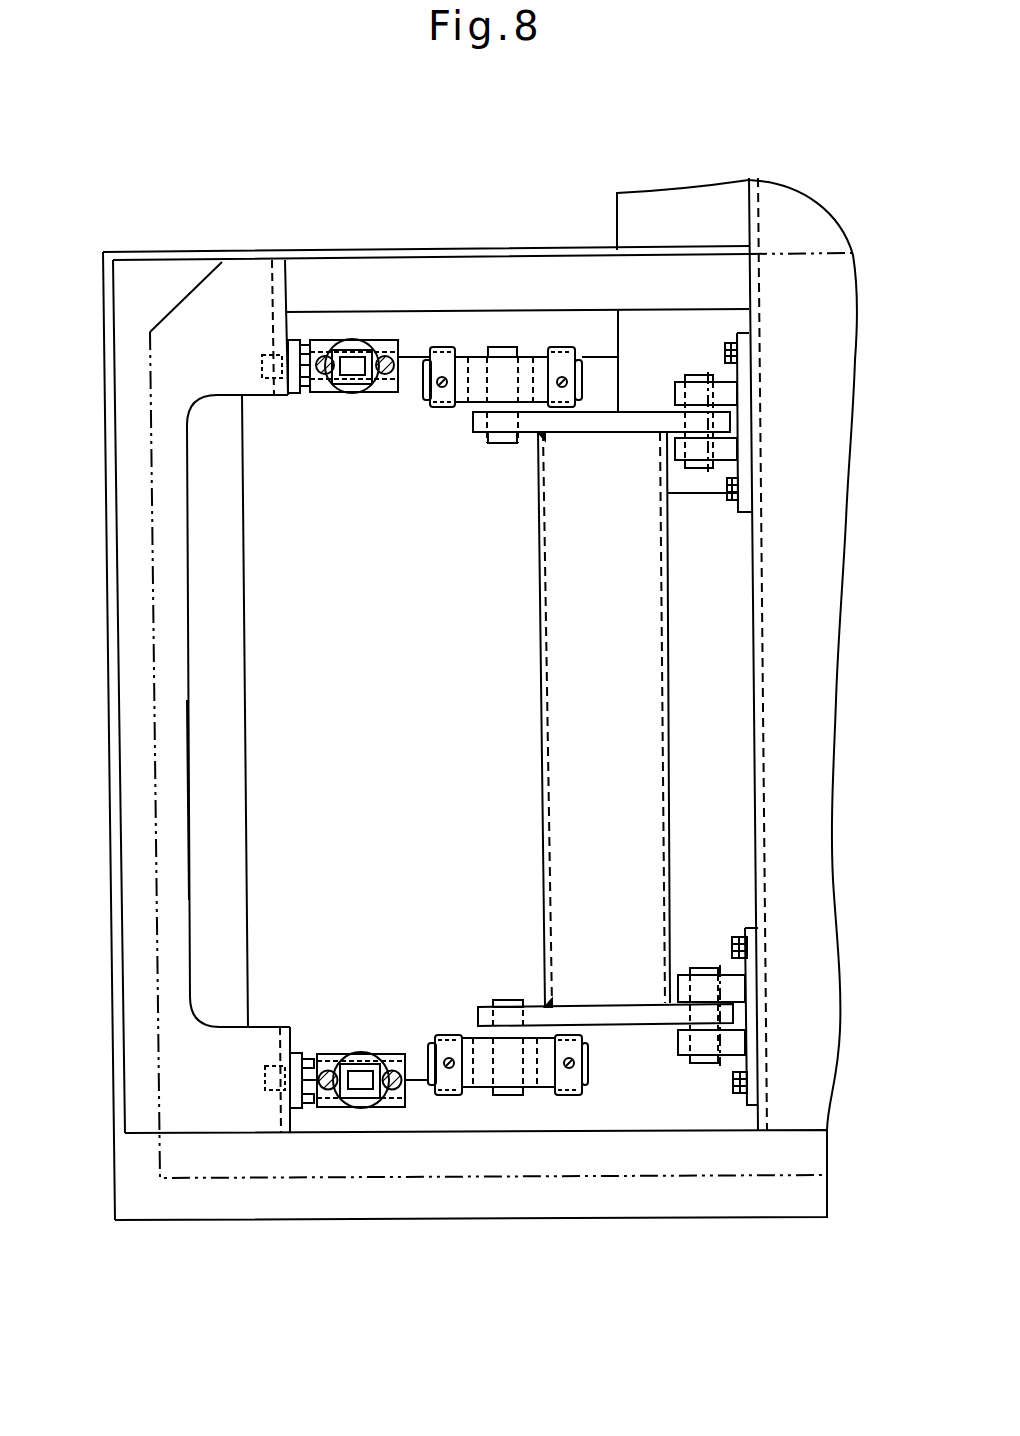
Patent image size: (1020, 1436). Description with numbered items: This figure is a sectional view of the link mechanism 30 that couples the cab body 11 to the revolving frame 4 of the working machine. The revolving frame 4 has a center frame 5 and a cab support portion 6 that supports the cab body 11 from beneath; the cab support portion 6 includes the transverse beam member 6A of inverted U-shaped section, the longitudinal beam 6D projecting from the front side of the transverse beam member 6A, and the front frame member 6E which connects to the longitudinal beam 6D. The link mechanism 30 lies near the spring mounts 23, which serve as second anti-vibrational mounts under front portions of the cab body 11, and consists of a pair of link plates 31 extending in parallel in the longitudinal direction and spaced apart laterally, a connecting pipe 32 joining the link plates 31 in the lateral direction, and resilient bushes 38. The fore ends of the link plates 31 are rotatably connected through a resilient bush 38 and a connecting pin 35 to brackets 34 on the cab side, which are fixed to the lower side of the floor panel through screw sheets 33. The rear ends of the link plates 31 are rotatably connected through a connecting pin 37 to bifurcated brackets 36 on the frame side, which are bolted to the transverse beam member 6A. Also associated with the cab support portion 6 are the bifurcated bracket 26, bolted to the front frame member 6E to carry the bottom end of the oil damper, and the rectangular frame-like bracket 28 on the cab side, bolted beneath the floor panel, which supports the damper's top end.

The revolving frame 4 is at (739, 1222).
The center frame 5 is at (705, 173).
The cab support portion 6 is at (172, 248).
The transverse beam member 6A is at (812, 800).
The longitudinal beam 6D is at (638, 280).
The front frame member 6E is at (147, 1065).
The cab body 11 is at (180, 1185).
The spring mount 23 is at (336, 332).
The bifurcated bracket 26 is at (296, 340).
The rectangular frame-like bracket 28 is at (383, 340).
The link mechanism 30 is at (686, 737).
The link plate 31 is at (590, 410).
The connecting pipe 32 is at (640, 648).
The screw sheet 33 is at (442, 347).
The bracket 34 is at (425, 378).
The connecting pin 35 is at (503, 347).
The bifurcated bracket 36 is at (730, 448).
The connecting pin 37 is at (700, 470).
The resilient bush 38 is at (480, 357).